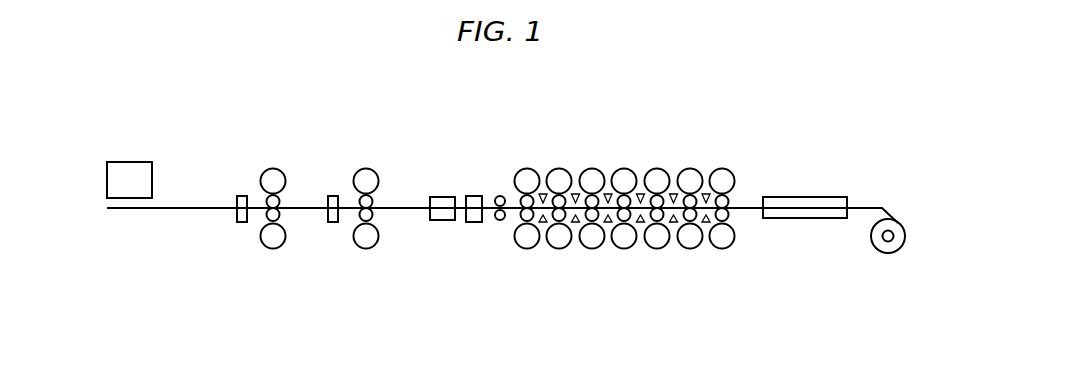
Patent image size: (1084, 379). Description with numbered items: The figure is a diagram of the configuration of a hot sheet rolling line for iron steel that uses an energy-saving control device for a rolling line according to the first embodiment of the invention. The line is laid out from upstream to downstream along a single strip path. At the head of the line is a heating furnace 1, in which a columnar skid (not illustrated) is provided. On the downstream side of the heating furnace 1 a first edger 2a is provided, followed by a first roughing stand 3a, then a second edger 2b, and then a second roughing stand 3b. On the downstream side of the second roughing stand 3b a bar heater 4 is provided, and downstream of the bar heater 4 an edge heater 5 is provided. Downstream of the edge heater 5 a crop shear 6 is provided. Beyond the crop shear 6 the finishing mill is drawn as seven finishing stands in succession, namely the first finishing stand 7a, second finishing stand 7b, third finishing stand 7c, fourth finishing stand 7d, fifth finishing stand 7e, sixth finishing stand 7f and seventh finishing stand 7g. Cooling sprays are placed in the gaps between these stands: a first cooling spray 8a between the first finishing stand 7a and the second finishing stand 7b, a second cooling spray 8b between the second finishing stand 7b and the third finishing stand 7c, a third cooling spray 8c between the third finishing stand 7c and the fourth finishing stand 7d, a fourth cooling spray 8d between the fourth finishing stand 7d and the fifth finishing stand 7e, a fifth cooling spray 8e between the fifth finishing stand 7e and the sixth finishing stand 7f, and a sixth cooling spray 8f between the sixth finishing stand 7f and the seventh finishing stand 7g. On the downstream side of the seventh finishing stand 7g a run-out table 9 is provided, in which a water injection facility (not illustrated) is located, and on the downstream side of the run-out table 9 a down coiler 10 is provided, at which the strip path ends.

The heating furnace 1 is at (133, 161).
The first edger 2a is at (240, 196).
The first roughing stand 3a is at (273, 168).
The second edger 2b is at (333, 196).
The second roughing stand 3b is at (366, 168).
The bar heater 4 is at (440, 197).
The edge heater 5 is at (474, 196).
The crop shear 6 is at (500, 222).
The first finishing stand 7a is at (527, 168).
The second finishing stand 7b is at (559, 168).
The third finishing stand 7c is at (592, 168).
The fourth finishing stand 7d is at (624, 168).
The fifth finishing stand 7e is at (657, 168).
The sixth finishing stand 7f is at (690, 168).
The seventh finishing stand 7g is at (722, 168).
The first cooling spray 8a is at (543, 222).
The second cooling spray 8b is at (576, 222).
The third cooling spray 8c is at (608, 222).
The fourth cooling spray 8d is at (640, 222).
The fifth cooling spray 8e is at (674, 222).
The sixth cooling spray 8f is at (706, 222).
The run-out table 9 is at (808, 197).
The down coiler 10 is at (888, 253).